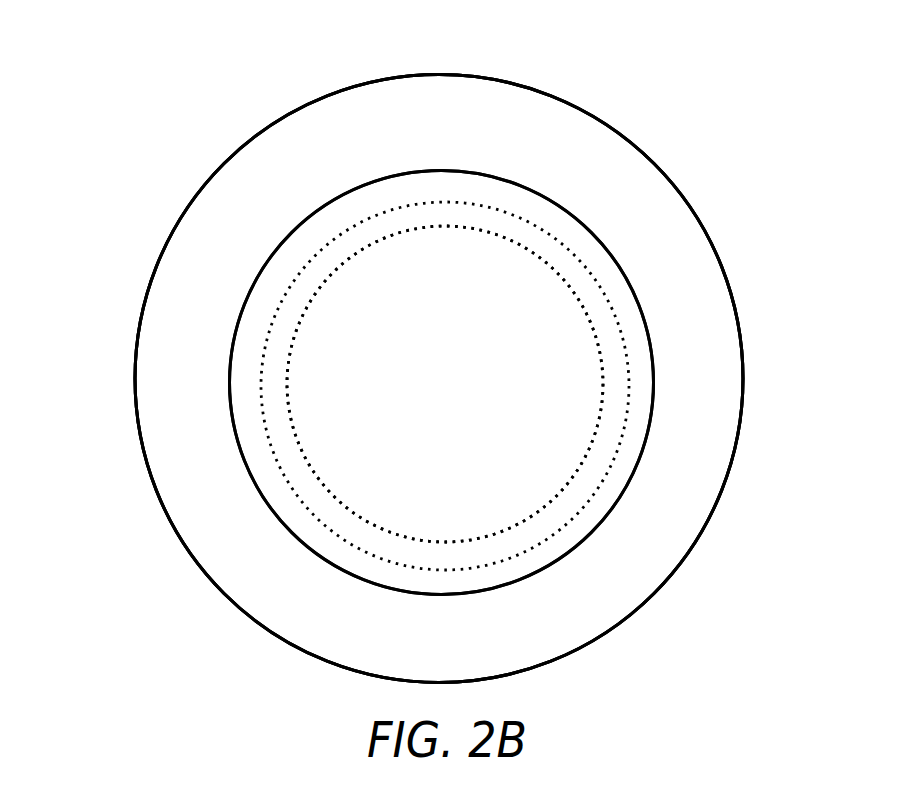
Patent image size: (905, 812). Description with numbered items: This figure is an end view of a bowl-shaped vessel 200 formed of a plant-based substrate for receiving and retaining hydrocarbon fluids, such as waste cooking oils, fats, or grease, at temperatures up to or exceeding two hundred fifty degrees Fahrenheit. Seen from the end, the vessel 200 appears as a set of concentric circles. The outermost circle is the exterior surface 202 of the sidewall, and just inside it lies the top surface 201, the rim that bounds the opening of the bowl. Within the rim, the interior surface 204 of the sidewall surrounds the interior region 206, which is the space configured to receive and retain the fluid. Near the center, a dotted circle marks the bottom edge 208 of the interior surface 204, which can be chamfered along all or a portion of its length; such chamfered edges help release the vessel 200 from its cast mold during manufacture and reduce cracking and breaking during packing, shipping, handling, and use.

The vessel 200 is at (149, 157).
The top surface 201 is at (183, 297).
The exterior surface 202 is at (133, 407).
The interior surface 204 is at (250, 472).
The interior region 206 is at (477, 255).
The bottom edge 208 is at (615, 425).